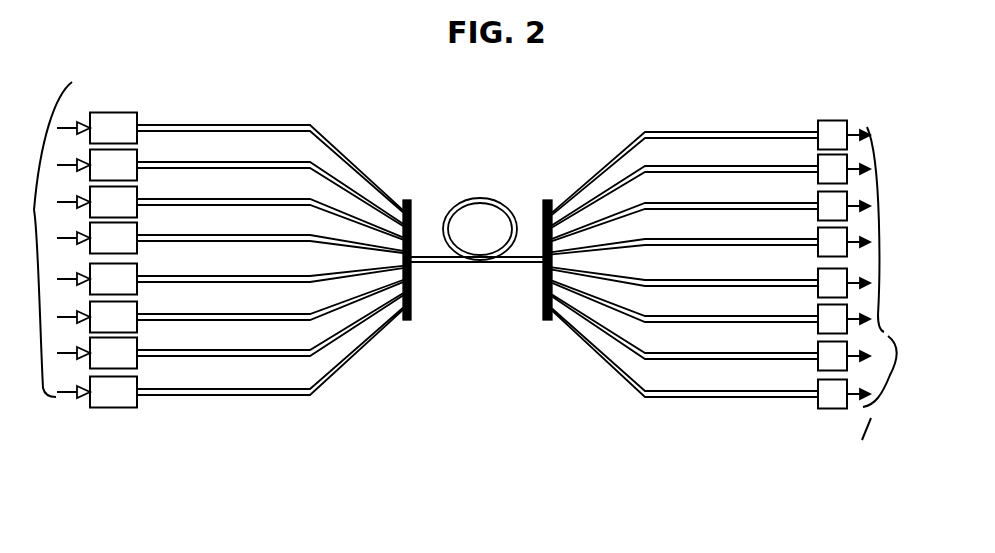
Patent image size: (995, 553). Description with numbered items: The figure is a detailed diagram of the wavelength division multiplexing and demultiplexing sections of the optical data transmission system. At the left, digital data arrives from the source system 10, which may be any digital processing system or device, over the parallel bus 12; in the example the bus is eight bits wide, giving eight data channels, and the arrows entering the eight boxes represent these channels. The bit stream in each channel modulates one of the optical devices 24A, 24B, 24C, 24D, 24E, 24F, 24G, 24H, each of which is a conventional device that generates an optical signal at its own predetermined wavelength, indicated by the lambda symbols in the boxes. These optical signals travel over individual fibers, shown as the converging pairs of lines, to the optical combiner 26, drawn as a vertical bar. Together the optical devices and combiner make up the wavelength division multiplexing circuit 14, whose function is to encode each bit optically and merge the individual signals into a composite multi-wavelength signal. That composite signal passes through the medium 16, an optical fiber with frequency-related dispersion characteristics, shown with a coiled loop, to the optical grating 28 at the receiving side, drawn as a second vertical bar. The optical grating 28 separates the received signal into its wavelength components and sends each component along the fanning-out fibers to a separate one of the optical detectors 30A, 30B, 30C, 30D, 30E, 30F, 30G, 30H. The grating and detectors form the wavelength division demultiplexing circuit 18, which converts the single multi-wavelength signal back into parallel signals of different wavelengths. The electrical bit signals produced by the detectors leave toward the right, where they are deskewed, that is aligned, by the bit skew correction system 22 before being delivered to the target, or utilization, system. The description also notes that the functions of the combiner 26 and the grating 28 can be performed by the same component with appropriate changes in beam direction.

The source system 10 is at (78, 203).
The parallel bus 12 is at (80, 420).
The wavelength division multiplexing circuit 14 is at (353, 153).
The medium 16 is at (521, 201).
The wavelength division demultiplexing circuit 18 is at (603, 145).
The bit skew correction system 22 is at (824, 308).
The optical device 24A is at (137, 118).
The optical device 24B is at (137, 155).
The optical device 24C is at (137, 192).
The optical device 24D is at (137, 228).
The optical device 24E is at (137, 269).
The optical device 24F is at (137, 307).
The optical device 24G is at (137, 343).
The optical device 24H is at (137, 382).
The optical combiner 26 is at (409, 318).
The optical grating 28 is at (546, 318).
The optical detector 30A is at (818, 126).
The optical detector 30B is at (818, 160).
The optical detector 30C is at (818, 197).
The optical detector 30D is at (818, 233).
The optical detector 30E is at (818, 274).
The optical detector 30F is at (818, 310).
The optical detector 30G is at (818, 347).
The optical detector 30H is at (818, 385).